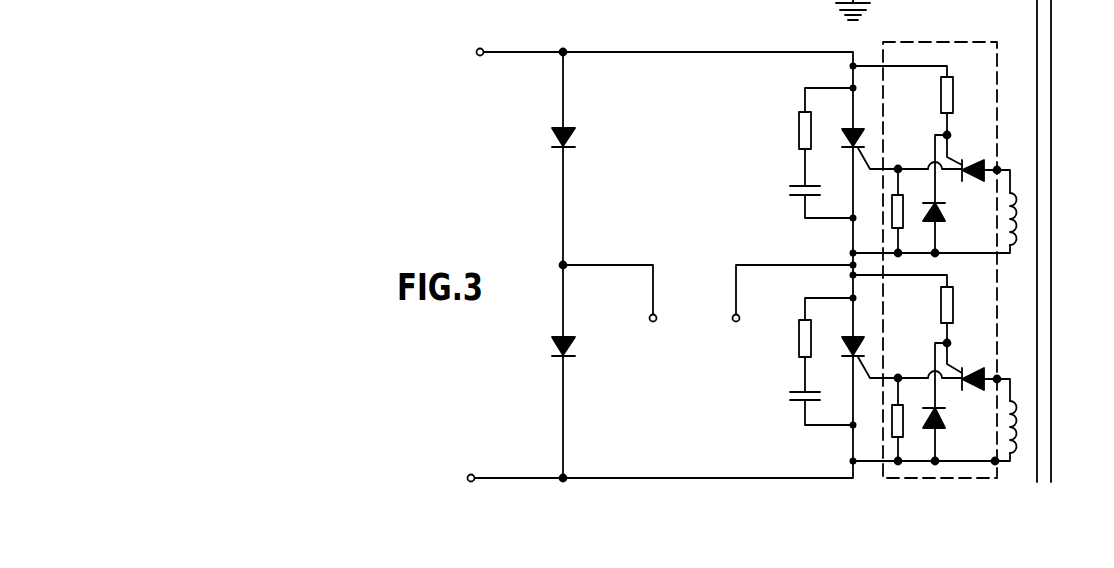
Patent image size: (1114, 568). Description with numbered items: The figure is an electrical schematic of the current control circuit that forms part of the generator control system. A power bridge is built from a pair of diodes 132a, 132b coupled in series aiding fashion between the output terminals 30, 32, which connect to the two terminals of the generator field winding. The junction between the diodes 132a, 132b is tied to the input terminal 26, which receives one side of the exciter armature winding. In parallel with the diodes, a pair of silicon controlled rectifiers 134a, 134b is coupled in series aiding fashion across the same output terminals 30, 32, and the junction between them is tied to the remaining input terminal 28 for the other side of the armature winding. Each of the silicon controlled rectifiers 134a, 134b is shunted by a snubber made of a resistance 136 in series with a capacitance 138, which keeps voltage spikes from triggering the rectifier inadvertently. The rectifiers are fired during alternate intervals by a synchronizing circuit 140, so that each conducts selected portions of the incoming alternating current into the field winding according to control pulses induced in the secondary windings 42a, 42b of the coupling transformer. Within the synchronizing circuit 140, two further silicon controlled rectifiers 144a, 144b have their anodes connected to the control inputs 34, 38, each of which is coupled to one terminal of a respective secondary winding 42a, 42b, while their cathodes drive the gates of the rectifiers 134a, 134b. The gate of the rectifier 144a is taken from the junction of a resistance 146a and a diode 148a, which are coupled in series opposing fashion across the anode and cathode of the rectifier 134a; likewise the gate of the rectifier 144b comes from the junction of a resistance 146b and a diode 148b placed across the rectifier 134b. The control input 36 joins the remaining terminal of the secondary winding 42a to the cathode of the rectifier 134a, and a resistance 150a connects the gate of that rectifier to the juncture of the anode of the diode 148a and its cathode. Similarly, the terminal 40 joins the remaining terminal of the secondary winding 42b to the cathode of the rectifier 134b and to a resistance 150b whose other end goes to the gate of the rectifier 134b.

The current control circuit input terminal 26 is at (700, 284).
The input terminal 28 is at (738, 321).
The output terminal 30 is at (476, 55).
The output terminal 32 is at (473, 475).
The control input 34 is at (1000, 163).
The control input 36 is at (1010, 246).
The control input 38 is at (1018, 368).
The input terminal 40 is at (998, 463).
The secondary winding 42a is at (1023, 217).
The secondary winding 42b is at (1023, 425).
The diode 132a is at (574, 137).
The diode 132b is at (572, 343).
The silicon controlled rectifier 134a is at (857, 127).
The silicon controlled rectifier 134b is at (858, 335).
The resistance 136 is at (799, 142).
The capacitance 138 is at (800, 195).
The synchronizing circuit 140 is at (977, 115).
The silicon controlled rectifier 144a is at (977, 165).
The silicon controlled rectifier 144b is at (980, 370).
The resistance 146a is at (953, 88).
The resistance 146b is at (978, 278).
The diode 148a is at (980, 231).
The diode 148b is at (938, 417).
The resistance 150a is at (890, 222).
The resistance 150b is at (892, 437).